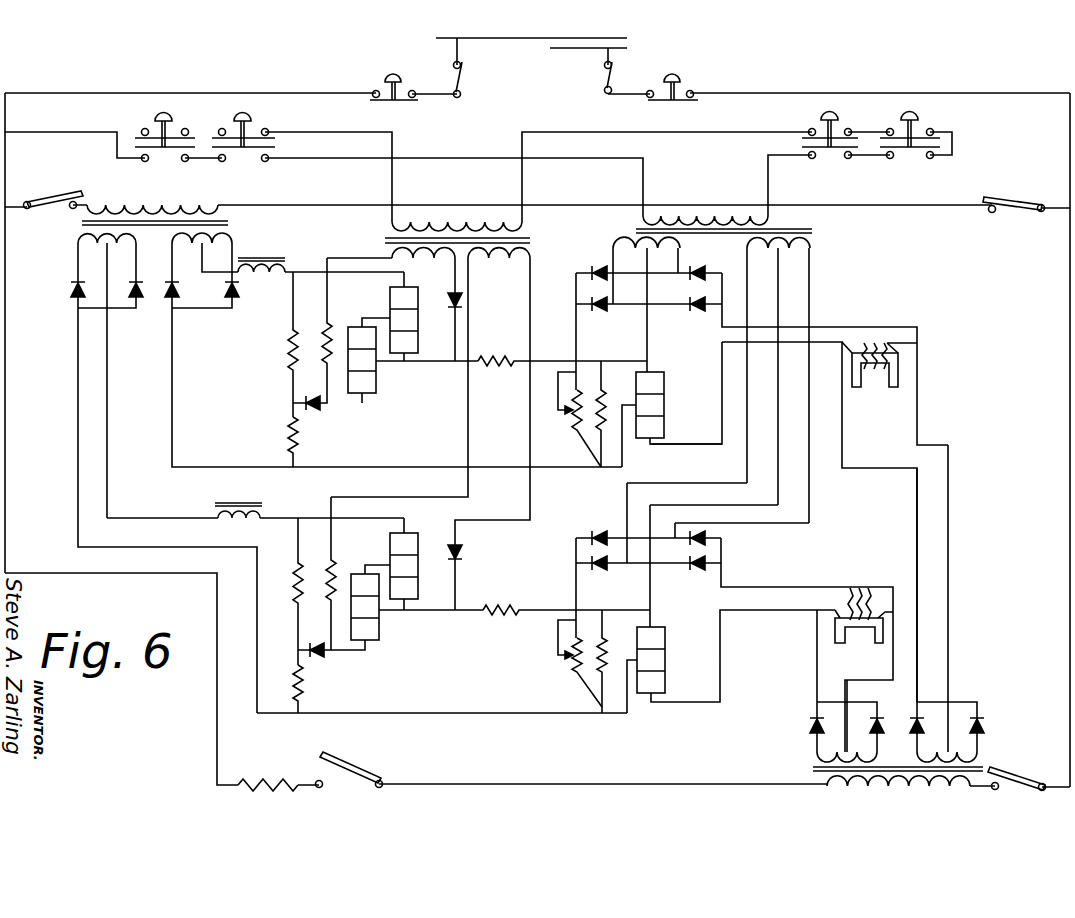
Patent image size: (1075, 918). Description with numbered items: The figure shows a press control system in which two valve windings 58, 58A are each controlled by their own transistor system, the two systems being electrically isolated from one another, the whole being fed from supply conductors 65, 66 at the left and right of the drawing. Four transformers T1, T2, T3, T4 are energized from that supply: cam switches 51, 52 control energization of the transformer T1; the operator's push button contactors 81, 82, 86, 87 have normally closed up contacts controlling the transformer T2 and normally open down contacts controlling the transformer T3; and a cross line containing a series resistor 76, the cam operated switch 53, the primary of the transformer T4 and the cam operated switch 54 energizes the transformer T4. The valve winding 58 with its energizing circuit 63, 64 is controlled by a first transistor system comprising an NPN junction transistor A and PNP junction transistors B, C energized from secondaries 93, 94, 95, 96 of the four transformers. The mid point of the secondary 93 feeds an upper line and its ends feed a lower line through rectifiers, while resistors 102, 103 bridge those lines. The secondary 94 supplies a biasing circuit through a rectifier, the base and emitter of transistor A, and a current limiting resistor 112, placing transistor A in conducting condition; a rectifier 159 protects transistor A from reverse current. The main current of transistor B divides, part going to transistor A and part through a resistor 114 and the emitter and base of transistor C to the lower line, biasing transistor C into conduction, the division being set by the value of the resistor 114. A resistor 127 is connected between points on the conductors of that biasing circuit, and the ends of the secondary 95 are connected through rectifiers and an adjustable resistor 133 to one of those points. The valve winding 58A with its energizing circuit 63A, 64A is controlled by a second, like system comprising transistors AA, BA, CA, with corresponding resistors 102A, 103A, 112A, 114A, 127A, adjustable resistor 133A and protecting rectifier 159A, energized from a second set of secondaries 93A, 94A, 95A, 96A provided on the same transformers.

The cam switch 51 is at (68, 194).
The cam switch 52 is at (1012, 198).
The cam operated switch 53 is at (356, 765).
The cam operated switch 54 is at (1019, 775).
The valve winding 58 is at (877, 346).
The energizing circuit conductor 63 is at (849, 346).
The energizing circuit conductor 64 is at (898, 346).
The valve winding 58A is at (856, 612).
The energizing circuit conductor 63A is at (822, 608).
The energizing circuit conductor 64A is at (885, 608).
The supply conductor 65 is at (5, 428).
The supply conductor 66 is at (1070, 448).
The resistor 76 is at (274, 778).
The push button contactor 81 is at (172, 116).
The push button contactor 82 is at (252, 116).
The push button contactor 86 is at (838, 112).
The push button contactor 87 is at (918, 112).
The secondary 93 is at (233, 239).
The secondary 93A is at (76, 240).
The secondary 94 is at (392, 254).
The secondary 94A is at (447, 423).
The secondary 95 is at (613, 246).
The secondary 95A is at (811, 244).
The secondary 96 is at (977, 756).
The secondary 96A is at (815, 754).
The resistor 102 is at (292, 352).
The resistor 102A is at (297, 583).
The resistor 103 is at (292, 435).
The resistor 103A is at (297, 683).
The current limiting resistor 112 is at (327, 324).
The current limiting resistor 112A is at (331, 560).
The resistor 114 is at (490, 357).
The resistor 114A is at (491, 606).
The resistor 127 is at (594, 414).
The resistor 127A is at (596, 661).
The adjustable resistor 133 is at (572, 418).
The adjustable resistor 133A is at (572, 663).
The rectifier 159 is at (313, 400).
The rectifier 159A is at (316, 657).
The NPN junction transistor A is at (406, 356).
The PNP junction transistor B is at (390, 290).
The PNP junction transistor C is at (636, 379).
The transistor AA is at (407, 601).
The transistor BA is at (390, 538).
The transistor CA is at (637, 632).
The transformer T1 is at (230, 222).
The transformer T2 is at (467, 227).
The transformer T3 is at (778, 223).
The transformer T4 is at (811, 769).